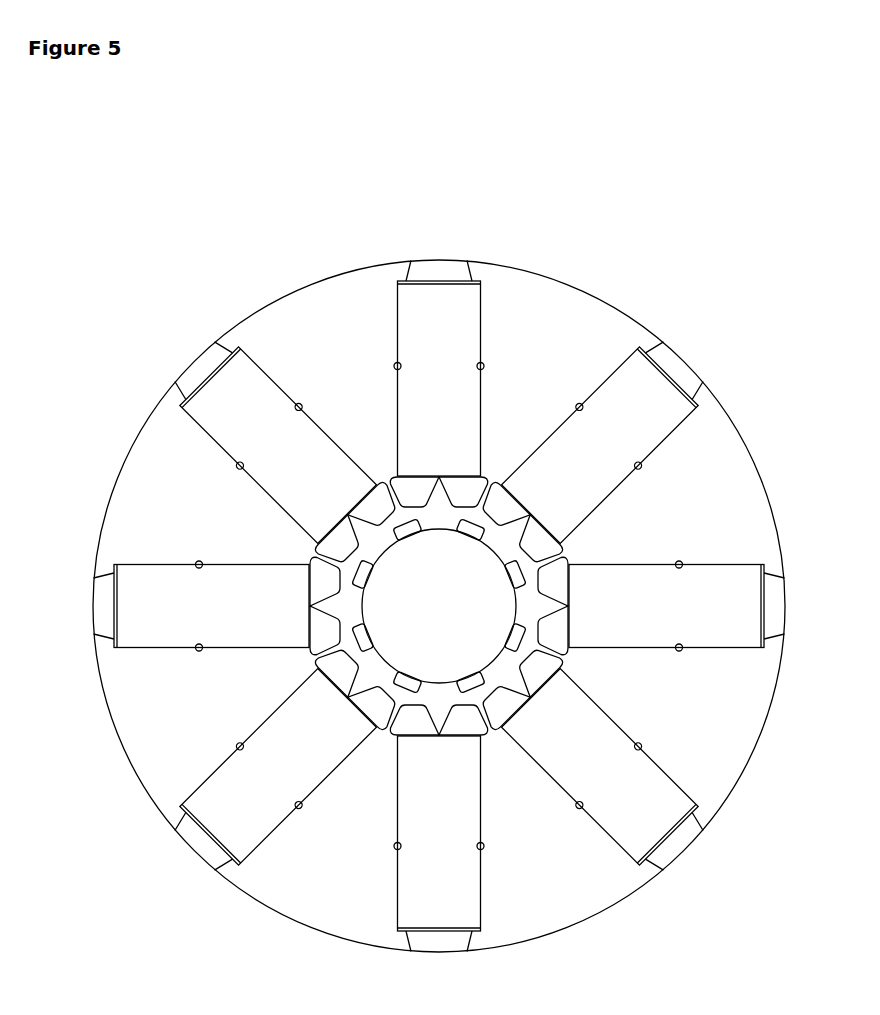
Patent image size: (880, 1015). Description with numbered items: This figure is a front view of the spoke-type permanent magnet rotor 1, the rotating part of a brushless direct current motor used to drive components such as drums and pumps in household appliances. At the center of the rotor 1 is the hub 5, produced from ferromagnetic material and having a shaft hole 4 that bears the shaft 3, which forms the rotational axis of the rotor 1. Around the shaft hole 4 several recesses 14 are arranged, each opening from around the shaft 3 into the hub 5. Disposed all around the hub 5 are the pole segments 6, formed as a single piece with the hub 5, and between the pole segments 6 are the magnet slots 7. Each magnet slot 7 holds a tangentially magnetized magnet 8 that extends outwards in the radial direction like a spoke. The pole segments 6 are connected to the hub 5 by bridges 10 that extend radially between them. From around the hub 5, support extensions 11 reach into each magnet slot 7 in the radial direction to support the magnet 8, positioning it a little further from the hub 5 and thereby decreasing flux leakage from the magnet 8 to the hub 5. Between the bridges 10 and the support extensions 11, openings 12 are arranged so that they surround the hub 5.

The spoke-type permanent magnet rotor 1 is at (137, 325).
The shaft 3 is at (453, 627).
The shaft hole 4 is at (363, 607).
The hub 5 is at (315, 602).
The pole segment 6 is at (318, 305).
The magnet slot 7 is at (202, 363).
The magnet 8 is at (436, 305).
The bridge 10 is at (387, 475).
The support extension 11 is at (440, 500).
The opening 12 is at (373, 508).
The recess 14 is at (470, 530).